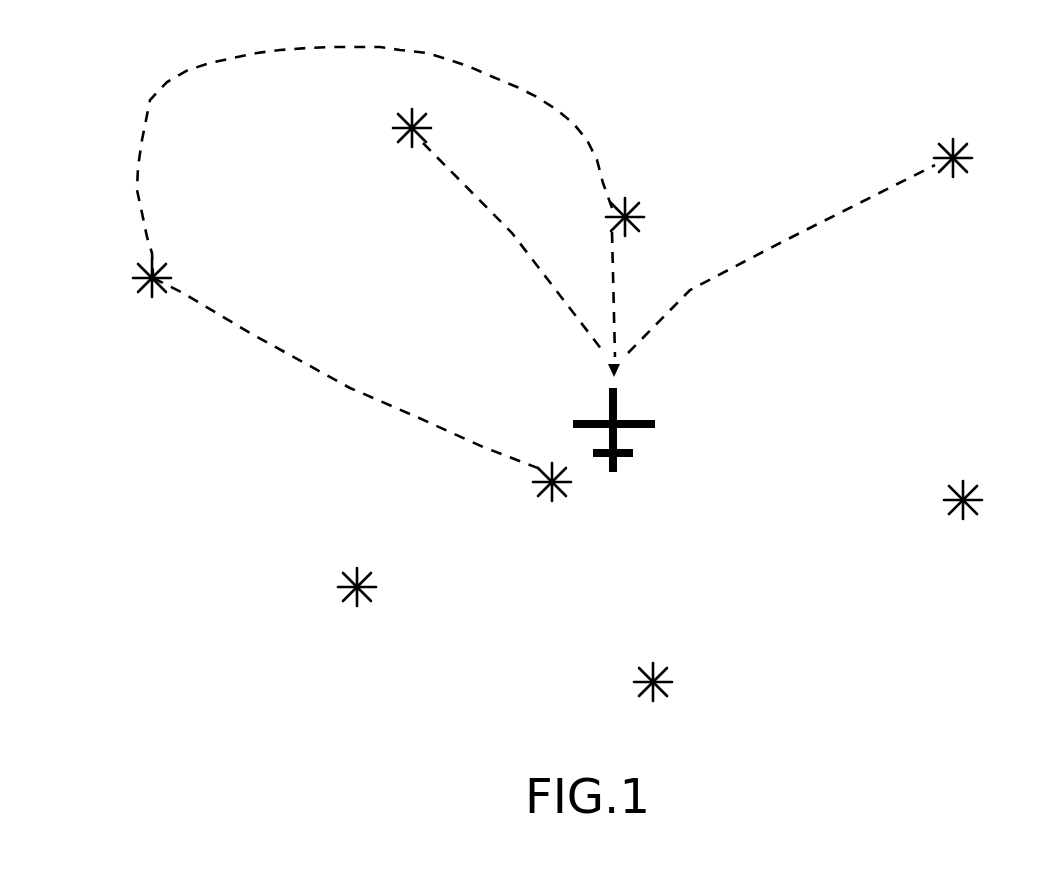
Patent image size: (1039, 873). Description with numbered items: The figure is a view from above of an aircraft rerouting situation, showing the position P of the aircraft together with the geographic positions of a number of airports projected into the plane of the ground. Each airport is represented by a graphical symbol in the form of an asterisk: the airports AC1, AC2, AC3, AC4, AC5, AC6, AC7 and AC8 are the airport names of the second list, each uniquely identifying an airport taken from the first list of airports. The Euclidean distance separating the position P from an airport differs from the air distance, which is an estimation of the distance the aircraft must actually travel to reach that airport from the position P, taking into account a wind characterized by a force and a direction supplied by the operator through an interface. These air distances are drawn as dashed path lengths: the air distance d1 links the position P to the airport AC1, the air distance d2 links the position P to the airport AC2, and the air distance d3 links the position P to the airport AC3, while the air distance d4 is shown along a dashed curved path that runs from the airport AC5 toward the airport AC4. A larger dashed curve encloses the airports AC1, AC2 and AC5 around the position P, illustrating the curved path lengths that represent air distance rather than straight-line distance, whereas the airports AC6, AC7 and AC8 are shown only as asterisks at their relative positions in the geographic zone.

The airport AC1 is at (637, 193).
The airport AC2 is at (379, 127).
The airport AC3 is at (969, 138).
The airport AC4 is at (562, 510).
The airport AC5 is at (138, 305).
The airport AC6 is at (368, 566).
The airport AC7 is at (660, 664).
The airport AC8 is at (973, 483).
The position of the aircraft P is at (614, 415).
The air distance d1 is at (620, 247).
The air distance d2 is at (510, 233).
The air distance d3 is at (790, 237).
The air distance d4 is at (350, 388).